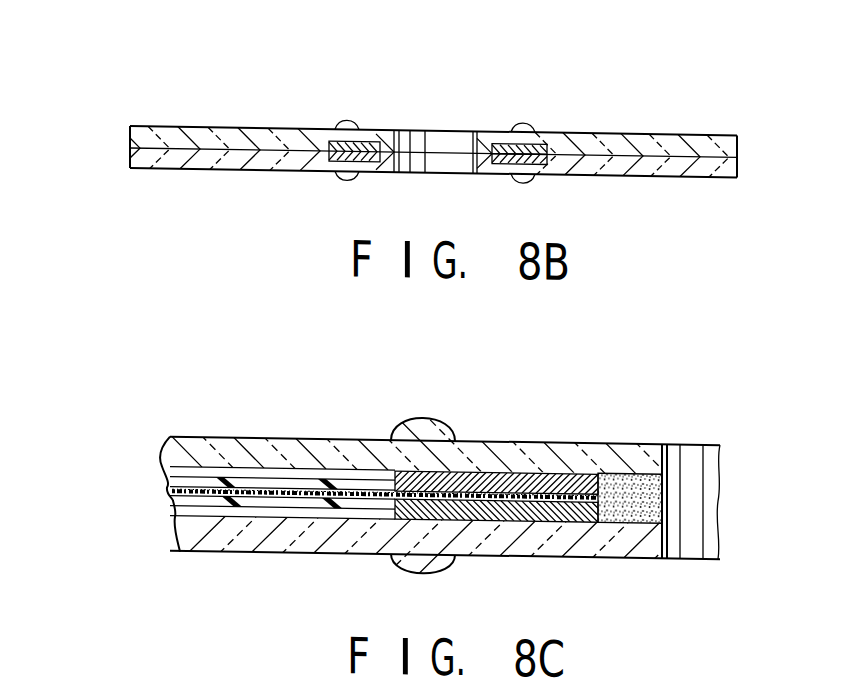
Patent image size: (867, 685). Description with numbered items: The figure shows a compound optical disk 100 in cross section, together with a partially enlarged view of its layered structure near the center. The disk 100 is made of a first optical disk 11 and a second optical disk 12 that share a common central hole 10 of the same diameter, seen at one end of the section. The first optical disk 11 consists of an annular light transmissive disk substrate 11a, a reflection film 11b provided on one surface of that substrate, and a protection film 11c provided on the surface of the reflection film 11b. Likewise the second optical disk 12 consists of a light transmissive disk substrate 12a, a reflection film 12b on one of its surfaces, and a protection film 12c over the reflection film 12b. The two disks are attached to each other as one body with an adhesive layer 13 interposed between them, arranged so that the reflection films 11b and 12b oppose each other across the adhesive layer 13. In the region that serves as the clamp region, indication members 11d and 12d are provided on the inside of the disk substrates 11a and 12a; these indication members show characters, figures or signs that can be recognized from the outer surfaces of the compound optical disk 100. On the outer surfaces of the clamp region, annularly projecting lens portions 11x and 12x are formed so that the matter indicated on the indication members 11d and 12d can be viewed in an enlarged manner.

In FIG. 8B, the compound optical disk 100 is at (693, 106).
In FIG. 8C, the compound optical disk 100 is at (717, 427).
In FIG. 8B, the central hole 10 is at (418, 130).
In FIG. 8C, the central hole 10 is at (688, 534).
In FIG. 8B, the first optical disk 11 is at (130, 128).
In FIG. 8C, the first optical disk 11 is at (148, 433).
In FIG. 8B, the disk substrate 11a is at (630, 125).
In FIG. 8C, the disk substrate 11a is at (187, 439).
In FIG. 8C, the reflection film 11b is at (218, 468).
In FIG. 8C, the protection film 11c is at (283, 475).
In FIG. 8B, the indication member 11d is at (503, 139).
In FIG. 8C, the indication member 11d is at (503, 472).
In FIG. 8C, the lens portion 11x is at (427, 415).
In FIG. 8B, the second optical disk 12 is at (130, 151).
In FIG. 8C, the second optical disk 12 is at (148, 500).
In FIG. 8B, the disk substrate 12a is at (615, 168).
In FIG. 8C, the disk substrate 12a is at (193, 535).
In FIG. 8C, the reflection film 12b is at (223, 509).
In FIG. 8C, the protection film 12c is at (290, 499).
In FIG. 8B, the indication member 12d is at (497, 165).
In FIG. 8C, the indication member 12d is at (568, 511).
In FIG. 8B, the lens portion 12x is at (530, 167).
In FIG. 8C, the lens portion 12x is at (413, 563).
In FIG. 8C, the adhesive layer 13 is at (338, 484).